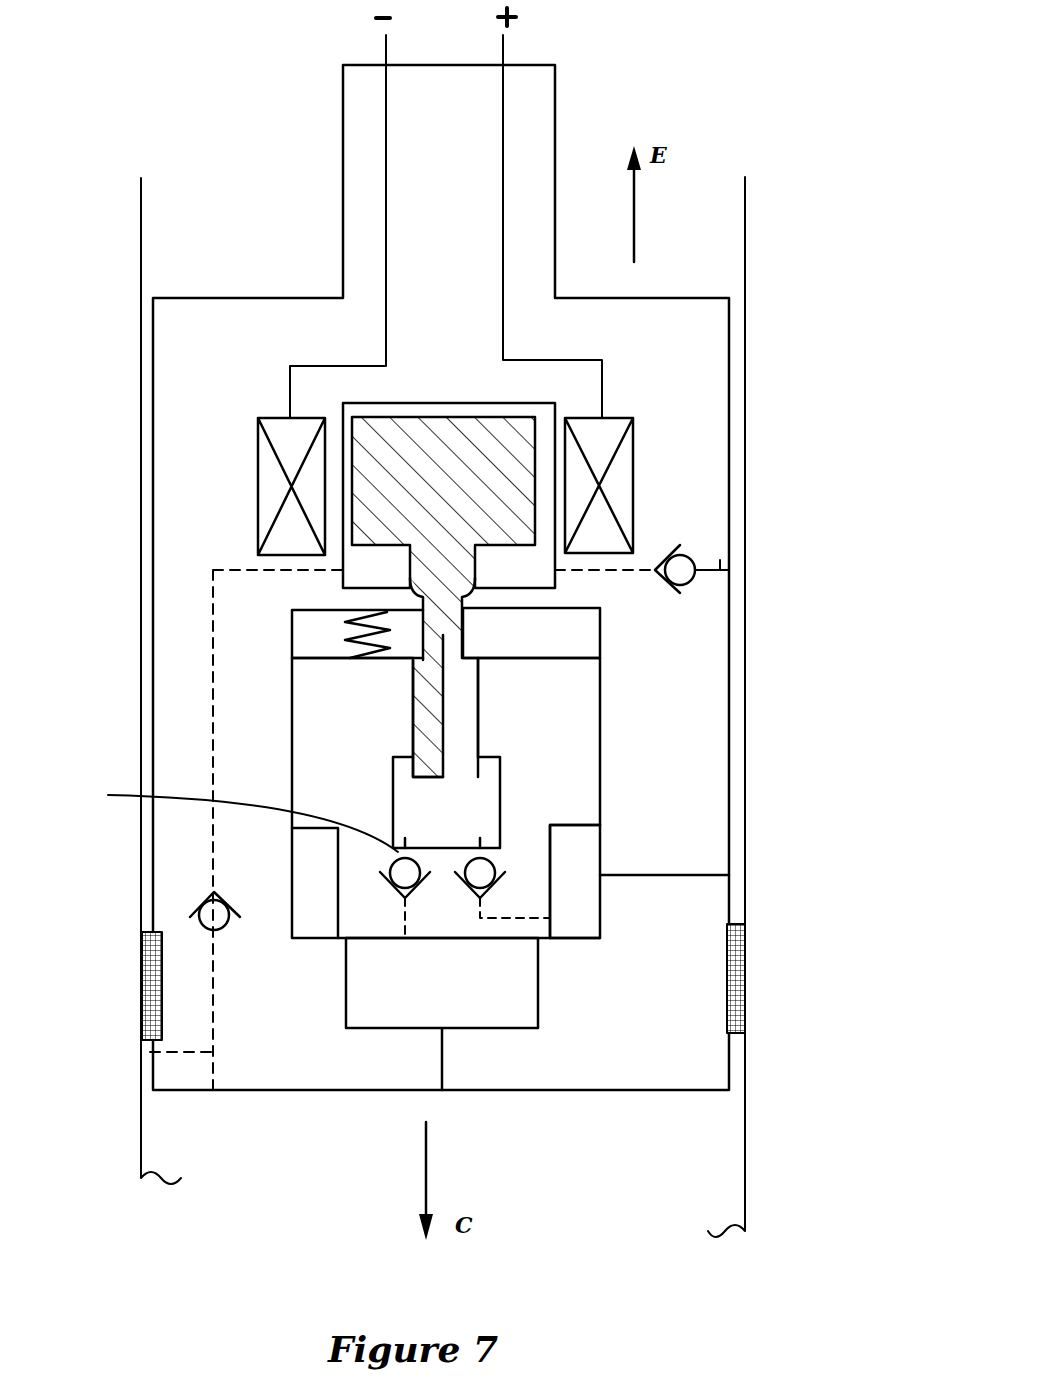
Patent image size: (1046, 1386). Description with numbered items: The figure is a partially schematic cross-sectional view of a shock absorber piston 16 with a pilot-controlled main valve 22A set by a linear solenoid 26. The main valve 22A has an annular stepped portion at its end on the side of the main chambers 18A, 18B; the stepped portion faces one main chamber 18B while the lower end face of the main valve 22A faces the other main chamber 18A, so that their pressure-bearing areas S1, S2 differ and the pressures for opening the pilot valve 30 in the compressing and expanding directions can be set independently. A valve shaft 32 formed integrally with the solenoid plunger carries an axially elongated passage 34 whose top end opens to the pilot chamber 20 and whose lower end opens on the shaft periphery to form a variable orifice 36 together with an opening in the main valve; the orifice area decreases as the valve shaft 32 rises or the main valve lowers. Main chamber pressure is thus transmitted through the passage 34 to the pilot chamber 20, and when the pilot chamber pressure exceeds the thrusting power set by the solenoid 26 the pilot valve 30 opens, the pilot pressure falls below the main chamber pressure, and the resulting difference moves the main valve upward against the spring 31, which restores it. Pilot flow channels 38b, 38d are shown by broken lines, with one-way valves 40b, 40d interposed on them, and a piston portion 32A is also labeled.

The piston 16 is at (727, 353).
The main chamber 18A is at (470, 1028).
The main chamber 18B is at (581, 932).
The pilot chamber 20 is at (577, 623).
The main valve 22A is at (543, 655).
The linear solenoid 26 is at (478, 392).
The pilot valve 30 is at (392, 582).
The spring 31 is at (383, 622).
The valve shaft 32 is at (393, 766).
The check valves 32A is at (443, 780).
The passage 34 is at (465, 720).
The variable orifice 36 is at (458, 740).
The pilot flow channel 38b is at (722, 566).
The pilot flow channel 38d is at (150, 1052).
The one-way valve 40b is at (686, 548).
The one-way valve 40d is at (210, 897).
The pressure-bearing area S1 is at (487, 942).
The pressure-bearing area S2 is at (572, 826).